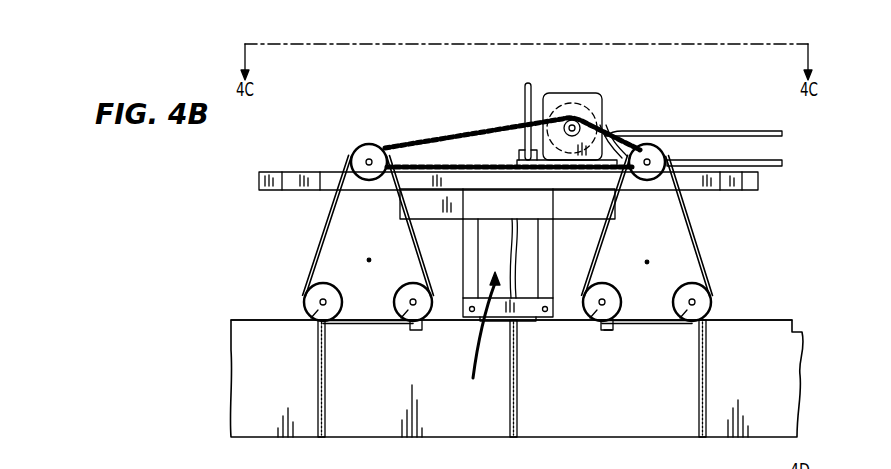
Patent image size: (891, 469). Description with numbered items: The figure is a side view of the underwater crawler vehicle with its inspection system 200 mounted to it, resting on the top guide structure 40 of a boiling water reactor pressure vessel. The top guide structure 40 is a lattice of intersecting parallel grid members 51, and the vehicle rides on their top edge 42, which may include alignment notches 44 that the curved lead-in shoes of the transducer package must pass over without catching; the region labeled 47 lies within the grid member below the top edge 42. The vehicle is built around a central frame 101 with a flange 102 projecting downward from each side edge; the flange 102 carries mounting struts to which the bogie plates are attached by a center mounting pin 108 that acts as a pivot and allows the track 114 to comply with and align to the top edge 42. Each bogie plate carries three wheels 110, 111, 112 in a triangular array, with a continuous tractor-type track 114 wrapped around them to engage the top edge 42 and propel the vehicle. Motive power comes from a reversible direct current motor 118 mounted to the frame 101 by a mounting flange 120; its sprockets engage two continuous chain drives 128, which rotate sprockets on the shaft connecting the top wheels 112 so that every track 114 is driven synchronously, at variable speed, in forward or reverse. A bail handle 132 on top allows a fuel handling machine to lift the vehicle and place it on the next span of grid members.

The top guide structure 40 is at (822, 338).
The top edge 42 is at (732, 318).
The alignment notch 44 is at (612, 332).
The compartment 47 is at (391, 397).
The parallel grid member 51 is at (318, 382).
The central frame 101 is at (760, 183).
The flange 102 is at (410, 203).
The center mounting pin 108 is at (369, 260).
The wheel 110 is at (412, 322).
The wheel 111 is at (308, 325).
The top wheel 112 is at (357, 157).
The track 114 is at (692, 228).
The motor 118 is at (600, 128).
The mounting flange 120 is at (570, 93).
The continuous chain drive 128 is at (418, 138).
The bail handle 132 is at (525, 100).
The inspection system 200 is at (471, 340).